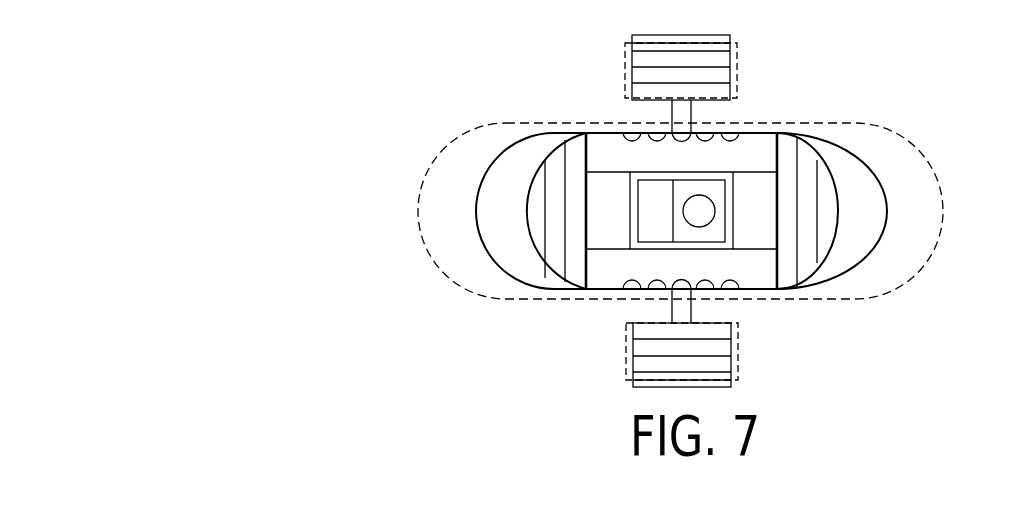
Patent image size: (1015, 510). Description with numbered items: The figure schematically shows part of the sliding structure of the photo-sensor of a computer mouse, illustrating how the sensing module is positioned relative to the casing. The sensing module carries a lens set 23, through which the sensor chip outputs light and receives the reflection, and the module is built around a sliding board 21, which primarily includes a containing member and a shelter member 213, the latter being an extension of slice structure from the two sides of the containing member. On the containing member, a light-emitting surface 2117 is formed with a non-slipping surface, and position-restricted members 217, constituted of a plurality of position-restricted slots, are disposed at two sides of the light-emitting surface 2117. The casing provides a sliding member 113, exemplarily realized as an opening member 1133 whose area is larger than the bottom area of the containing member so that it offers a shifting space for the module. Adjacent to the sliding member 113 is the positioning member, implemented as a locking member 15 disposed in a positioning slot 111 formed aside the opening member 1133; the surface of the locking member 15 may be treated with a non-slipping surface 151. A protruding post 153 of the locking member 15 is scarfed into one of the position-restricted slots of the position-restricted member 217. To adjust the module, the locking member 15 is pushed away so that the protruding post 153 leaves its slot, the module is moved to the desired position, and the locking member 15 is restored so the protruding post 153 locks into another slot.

The locking member 15 is at (646, 59).
The positioning slot 111 is at (730, 36).
The non-slipping surface 151 is at (707, 77).
The protruding post 153 is at (678, 128).
The sliding member 113 is at (503, 150).
The opening member 1133 is at (498, 198).
The shelter member 213 is at (435, 228).
The sliding board 21 is at (547, 267).
The position-restricted member 217 is at (628, 131).
The light-emitting surface 2117 is at (566, 147).
The lens set 23 is at (710, 232).